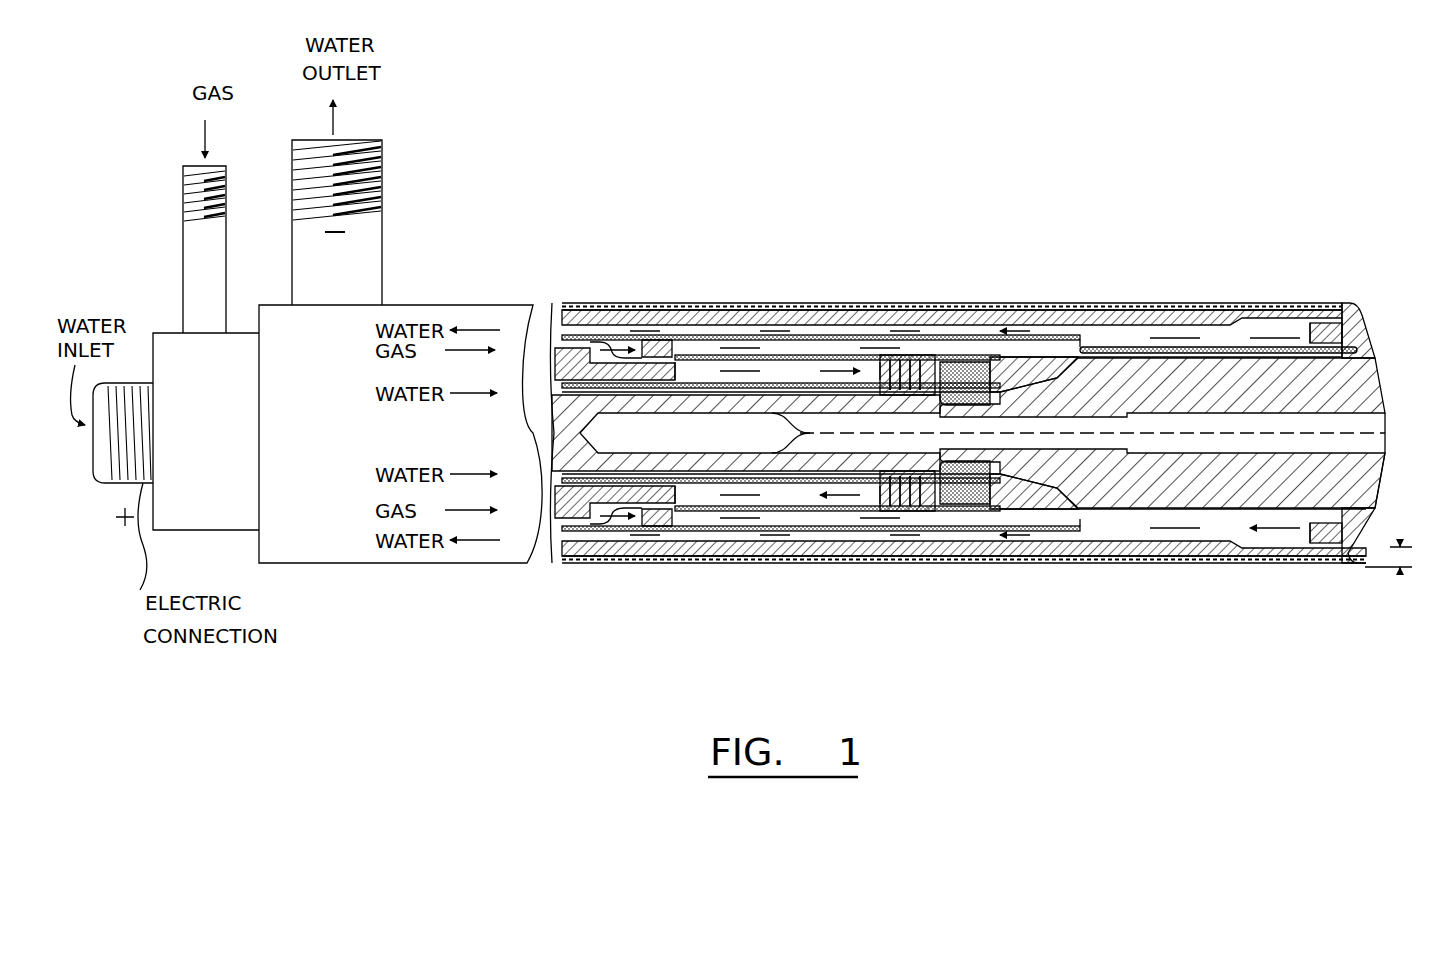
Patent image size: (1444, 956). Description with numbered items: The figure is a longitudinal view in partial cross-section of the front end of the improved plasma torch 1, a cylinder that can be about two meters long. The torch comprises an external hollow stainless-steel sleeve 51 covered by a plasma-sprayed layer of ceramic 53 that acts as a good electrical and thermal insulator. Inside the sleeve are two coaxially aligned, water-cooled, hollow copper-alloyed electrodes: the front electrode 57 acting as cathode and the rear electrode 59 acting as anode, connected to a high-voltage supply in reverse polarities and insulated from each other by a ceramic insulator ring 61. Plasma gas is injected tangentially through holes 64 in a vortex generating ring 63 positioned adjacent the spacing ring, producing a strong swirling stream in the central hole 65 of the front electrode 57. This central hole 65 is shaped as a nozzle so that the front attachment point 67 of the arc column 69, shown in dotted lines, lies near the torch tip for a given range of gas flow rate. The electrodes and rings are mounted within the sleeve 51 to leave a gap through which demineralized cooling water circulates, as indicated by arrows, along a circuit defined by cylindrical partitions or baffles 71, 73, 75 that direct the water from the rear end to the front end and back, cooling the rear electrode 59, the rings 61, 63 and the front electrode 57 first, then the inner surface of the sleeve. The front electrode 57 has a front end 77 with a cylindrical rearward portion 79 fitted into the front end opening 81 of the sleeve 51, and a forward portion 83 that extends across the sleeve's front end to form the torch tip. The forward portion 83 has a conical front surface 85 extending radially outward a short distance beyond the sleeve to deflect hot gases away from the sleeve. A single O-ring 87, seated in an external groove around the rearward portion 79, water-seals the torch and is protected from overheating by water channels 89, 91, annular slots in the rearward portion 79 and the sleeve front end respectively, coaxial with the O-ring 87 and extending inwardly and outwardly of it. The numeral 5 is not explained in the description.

The torch 1 is at (965, 213).
The central bore / orifice 5 is at (1405, 423).
The sleeve 51 is at (1146, 318).
The layer of ceramic 53 is at (1046, 305).
The front electrode 57 is at (1165, 390).
The rear electrode 59 is at (795, 395).
The ceramic insulator ring 61 is at (988, 363).
The vortex generating ring 63 is at (945, 503).
The holes 64 is at (915, 355).
The central hole 65 is at (1250, 447).
The front attachment point 67 is at (1385, 410).
The arc column 69 is at (1390, 447).
The cylindrical partition 71 is at (588, 328).
The cylindrical partition 73 is at (716, 335).
The cylindrical partition 75 is at (1098, 333).
The front end 77 is at (1358, 308).
The cylindrical rearward portion 79 is at (1296, 335).
The front end opening 81 is at (1342, 304).
The forward portion 83 is at (1350, 303).
The conical front surface 85 is at (1358, 351).
The O-ring 87 is at (1318, 545).
The water channel 89 is at (1310, 323).
The water channel 91 is at (1345, 332).